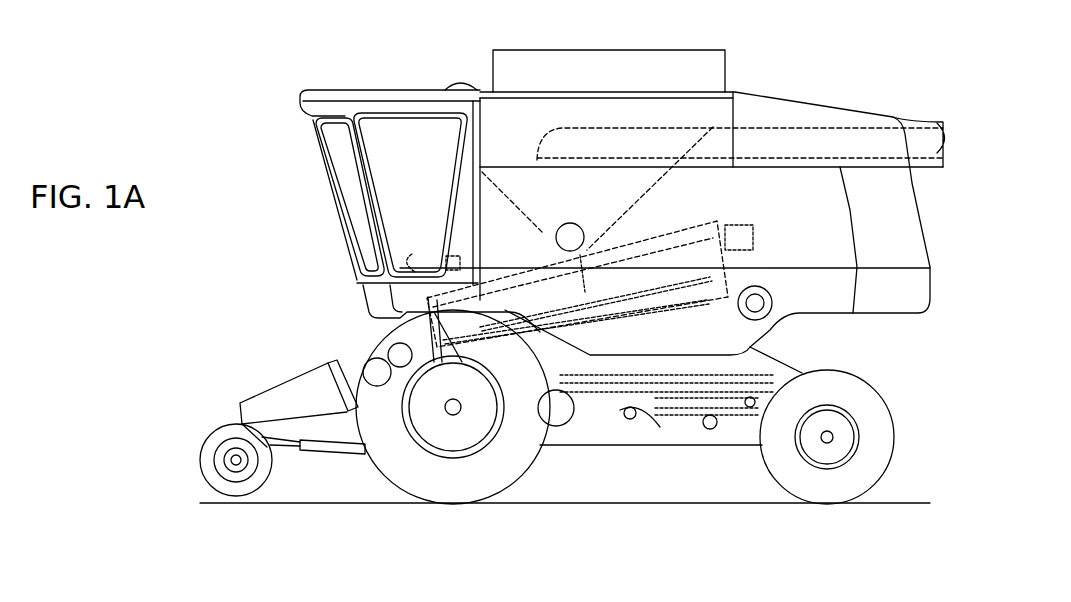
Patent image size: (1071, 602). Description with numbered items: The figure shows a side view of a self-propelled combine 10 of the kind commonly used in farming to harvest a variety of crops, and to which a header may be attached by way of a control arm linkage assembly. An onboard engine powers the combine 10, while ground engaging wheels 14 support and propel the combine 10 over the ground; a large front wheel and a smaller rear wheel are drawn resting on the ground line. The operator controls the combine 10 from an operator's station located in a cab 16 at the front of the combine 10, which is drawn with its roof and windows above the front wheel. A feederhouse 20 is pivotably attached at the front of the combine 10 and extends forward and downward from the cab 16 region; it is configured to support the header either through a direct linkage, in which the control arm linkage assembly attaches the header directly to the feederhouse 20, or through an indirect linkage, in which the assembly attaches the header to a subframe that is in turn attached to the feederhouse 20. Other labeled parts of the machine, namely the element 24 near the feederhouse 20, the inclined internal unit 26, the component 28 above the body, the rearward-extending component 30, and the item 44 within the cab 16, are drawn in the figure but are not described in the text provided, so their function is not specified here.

The self-propelled combine 10 is at (283, 68).
The ground engaging wheels 14 is at (475, 500).
The cab 16 is at (323, 238).
The feederhouse 20 is at (285, 370).
The hydraulic cylinder 24 is at (312, 462).
The threshing and separating unit 26 is at (650, 332).
The grain tank 28 is at (606, 82).
The unloading auger 30 is at (783, 143).
The display / user interface 44 is at (412, 270).